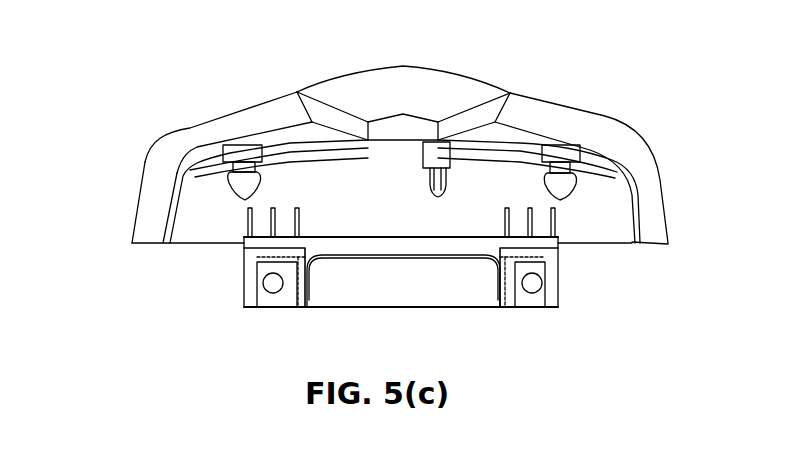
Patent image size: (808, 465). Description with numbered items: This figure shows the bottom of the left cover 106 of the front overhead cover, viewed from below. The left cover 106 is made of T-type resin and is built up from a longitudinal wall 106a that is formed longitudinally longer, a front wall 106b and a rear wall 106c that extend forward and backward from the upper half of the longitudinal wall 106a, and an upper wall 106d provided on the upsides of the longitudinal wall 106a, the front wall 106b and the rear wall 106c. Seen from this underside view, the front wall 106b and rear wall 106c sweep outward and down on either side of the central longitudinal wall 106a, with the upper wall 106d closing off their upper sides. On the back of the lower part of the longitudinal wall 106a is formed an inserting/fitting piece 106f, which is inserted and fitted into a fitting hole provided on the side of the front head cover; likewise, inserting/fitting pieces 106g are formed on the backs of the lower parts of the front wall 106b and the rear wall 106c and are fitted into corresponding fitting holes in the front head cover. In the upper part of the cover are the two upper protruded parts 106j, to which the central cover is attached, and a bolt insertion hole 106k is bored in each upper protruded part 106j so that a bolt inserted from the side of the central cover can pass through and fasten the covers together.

The left cover 106 is at (118, 108).
The longitudinal wall 106a is at (417, 75).
The front wall 106b is at (203, 133).
The rear wall 106c is at (578, 128).
The upper wall 106d is at (193, 233).
The inserting/fitting piece 106f is at (443, 192).
The inserting/fitting piece 106g is at (238, 185).
The upper protruded part 106j is at (246, 294).
The bolt insertion hole 106k is at (273, 288).